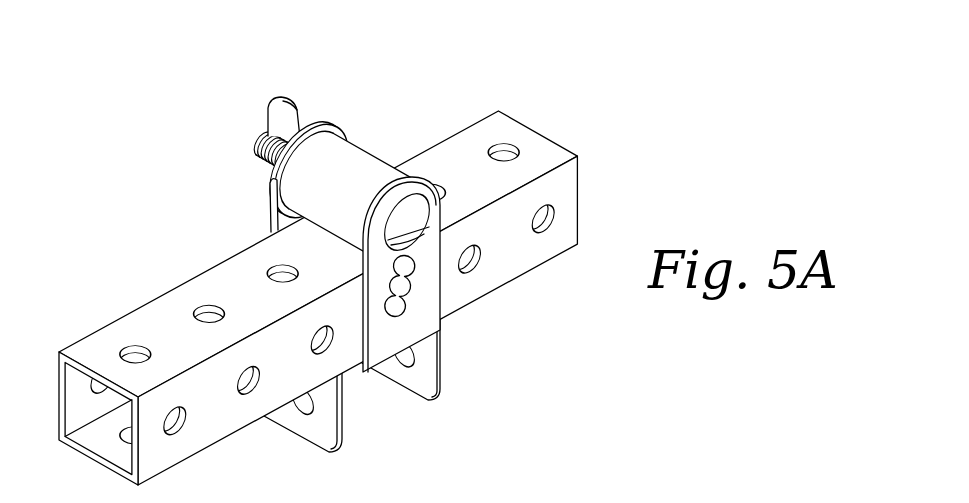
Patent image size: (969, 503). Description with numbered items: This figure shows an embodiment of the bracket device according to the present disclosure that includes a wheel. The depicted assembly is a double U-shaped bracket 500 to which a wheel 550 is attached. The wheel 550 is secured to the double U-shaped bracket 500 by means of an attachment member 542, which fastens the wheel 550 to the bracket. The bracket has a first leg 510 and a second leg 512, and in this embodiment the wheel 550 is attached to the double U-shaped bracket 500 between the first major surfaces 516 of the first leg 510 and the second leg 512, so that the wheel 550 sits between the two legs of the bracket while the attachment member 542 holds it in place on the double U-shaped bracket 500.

The double U-shaped bracket 500 is at (494, 432).
The first leg 510 is at (441, 178).
The second leg 512 is at (331, 125).
The first major surfaces 516 is at (270, 194).
The attachment member 542 is at (272, 103).
The wheel 550 is at (381, 156).